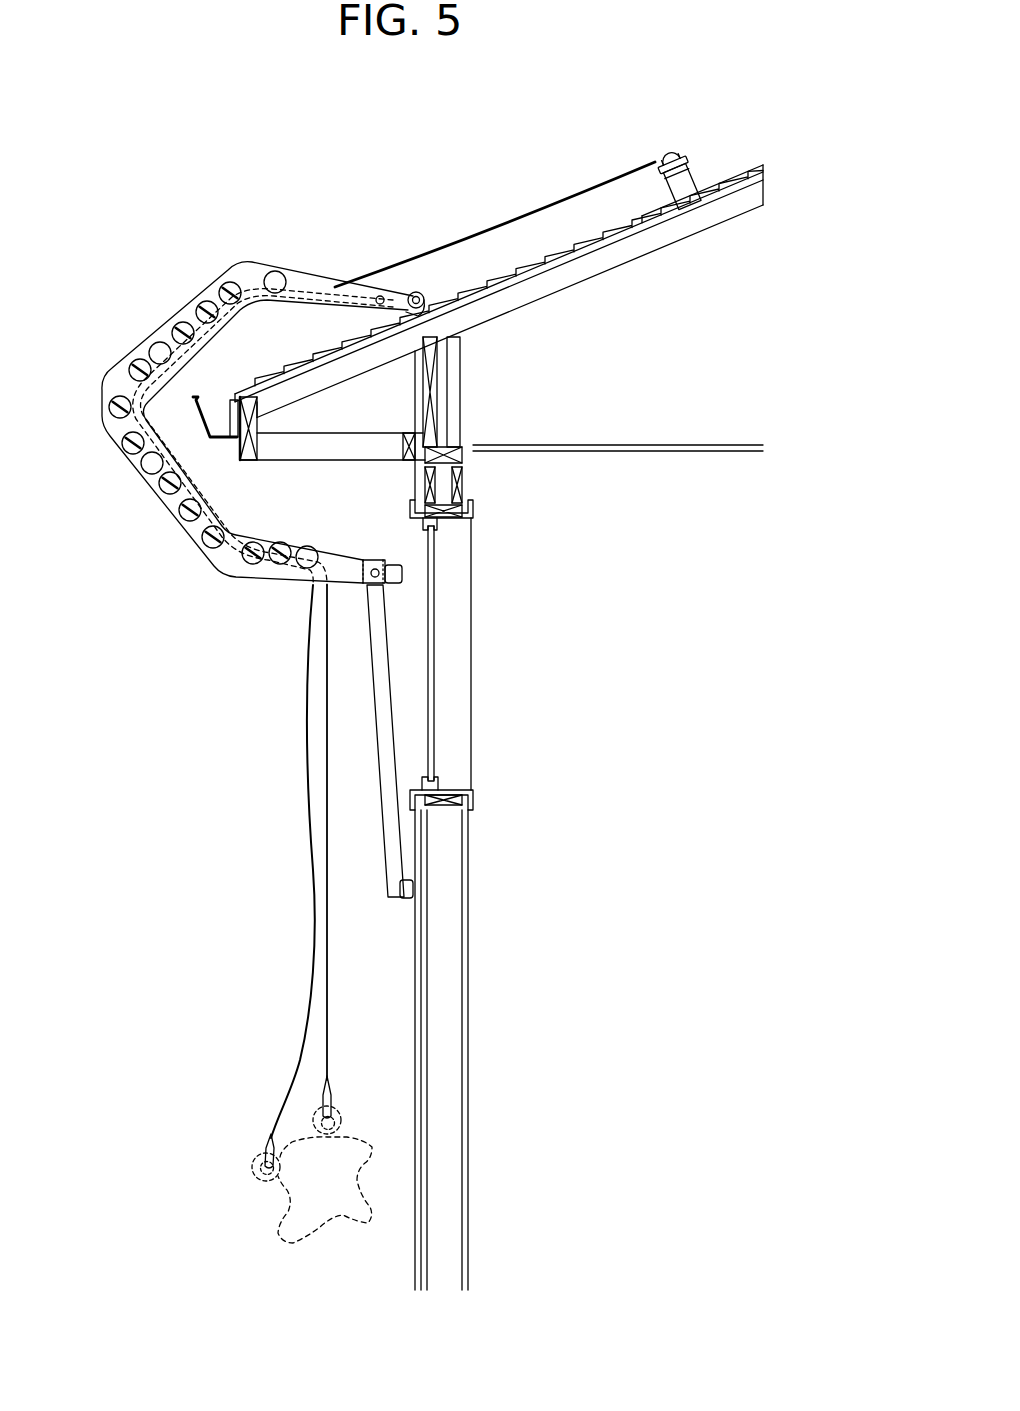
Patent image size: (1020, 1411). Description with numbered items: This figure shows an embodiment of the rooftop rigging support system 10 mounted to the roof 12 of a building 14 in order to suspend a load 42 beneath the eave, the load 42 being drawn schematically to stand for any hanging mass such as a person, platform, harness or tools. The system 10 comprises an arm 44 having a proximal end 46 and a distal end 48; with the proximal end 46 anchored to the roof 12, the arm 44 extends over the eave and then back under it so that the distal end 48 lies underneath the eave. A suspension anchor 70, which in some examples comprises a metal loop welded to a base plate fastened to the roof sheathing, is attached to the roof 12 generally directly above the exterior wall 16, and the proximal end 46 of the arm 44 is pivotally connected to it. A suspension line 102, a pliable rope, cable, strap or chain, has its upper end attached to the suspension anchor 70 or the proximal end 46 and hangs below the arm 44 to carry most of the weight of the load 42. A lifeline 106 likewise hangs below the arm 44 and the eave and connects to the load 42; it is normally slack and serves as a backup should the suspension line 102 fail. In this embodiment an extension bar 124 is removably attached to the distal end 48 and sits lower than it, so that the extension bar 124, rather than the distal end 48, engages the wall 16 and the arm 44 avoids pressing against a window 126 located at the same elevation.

The rooftop rigging support system 10 is at (137, 177).
The roof 12 is at (720, 182).
The building 14 is at (415, 1030).
The exterior wall 16 is at (415, 982).
The load 42 is at (280, 1238).
The arm 44 is at (125, 362).
The proximal end 46 is at (372, 318).
The distal end 48 is at (412, 581).
The suspension anchor 70 is at (417, 292).
The suspension line 102 is at (324, 295).
The lifeline 106 is at (308, 864).
The extension bar 124 is at (378, 792).
The window 126 is at (437, 680).